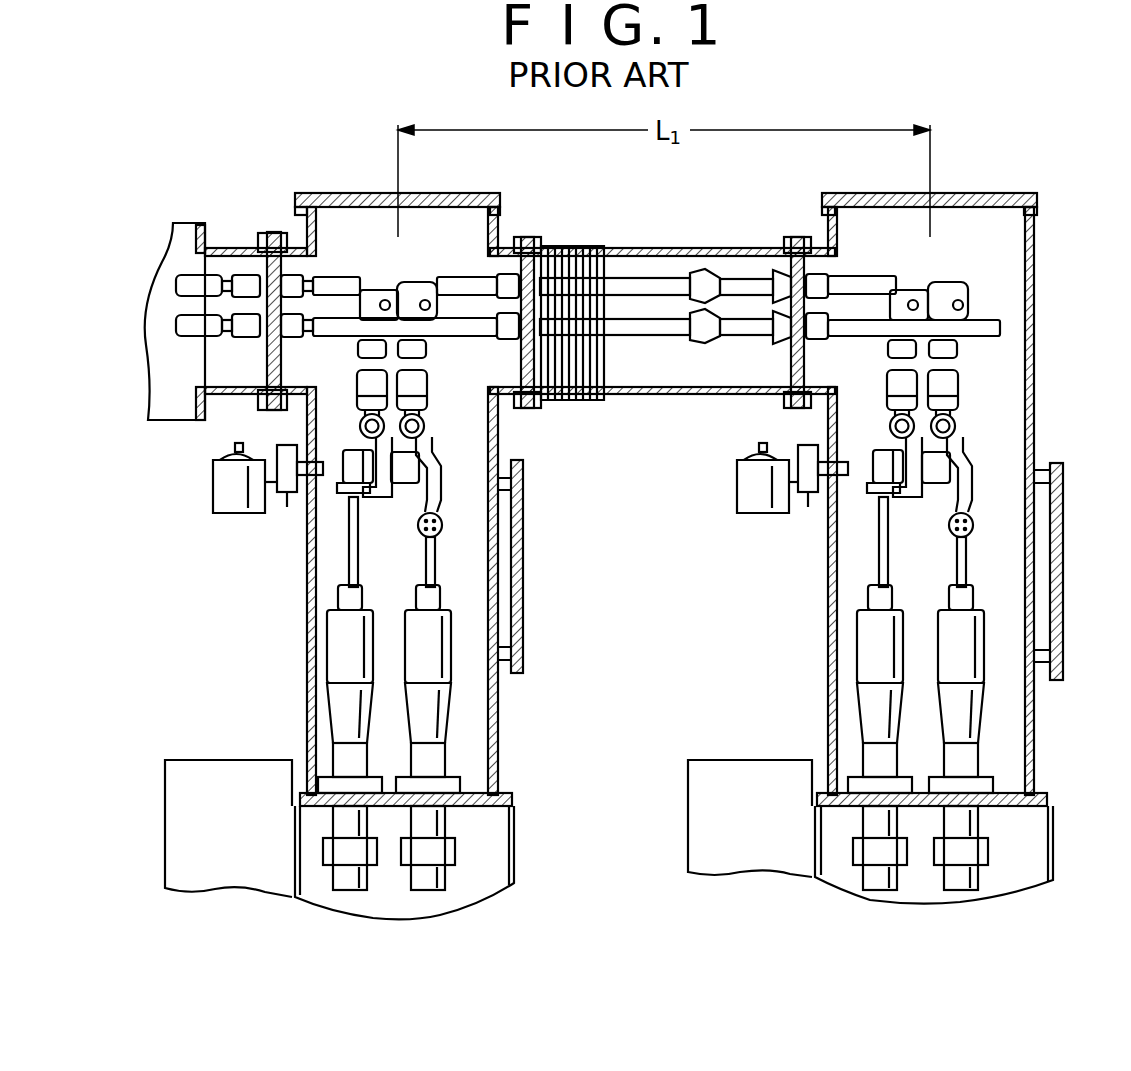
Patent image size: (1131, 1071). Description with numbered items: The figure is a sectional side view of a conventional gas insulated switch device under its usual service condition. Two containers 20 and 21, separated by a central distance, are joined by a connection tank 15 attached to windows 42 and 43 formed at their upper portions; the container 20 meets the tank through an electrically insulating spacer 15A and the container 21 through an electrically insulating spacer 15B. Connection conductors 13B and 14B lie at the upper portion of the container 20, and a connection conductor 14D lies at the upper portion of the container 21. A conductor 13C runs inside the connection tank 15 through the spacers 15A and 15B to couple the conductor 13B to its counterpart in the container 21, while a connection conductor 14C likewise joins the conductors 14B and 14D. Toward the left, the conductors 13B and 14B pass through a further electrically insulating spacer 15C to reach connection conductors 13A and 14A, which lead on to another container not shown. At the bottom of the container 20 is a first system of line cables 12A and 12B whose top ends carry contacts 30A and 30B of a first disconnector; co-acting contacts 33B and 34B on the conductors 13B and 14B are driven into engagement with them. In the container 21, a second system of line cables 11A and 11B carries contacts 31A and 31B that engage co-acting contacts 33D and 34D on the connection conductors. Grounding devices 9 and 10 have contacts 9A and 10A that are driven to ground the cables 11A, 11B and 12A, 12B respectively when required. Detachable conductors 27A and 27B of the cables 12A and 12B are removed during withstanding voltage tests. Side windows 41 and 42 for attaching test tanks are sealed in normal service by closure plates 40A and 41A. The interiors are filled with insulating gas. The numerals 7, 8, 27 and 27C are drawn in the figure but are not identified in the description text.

The fuse 7 is at (960, 362).
The fuse 8 is at (428, 376).
The grounding device 9 is at (746, 496).
The contact 9A is at (847, 478).
The grounding device 10 is at (212, 486).
The contact 10A is at (296, 495).
The line cable 11A is at (870, 642).
The line cable 11B is at (980, 626).
The line cable 12A is at (340, 636).
The line cable 12B is at (450, 662).
The connection conductor 13A is at (176, 326).
The connection conductor 13B is at (378, 292).
The conductor 13C is at (667, 337).
The connection conductor 14A is at (170, 285).
The connection conductor 14B is at (333, 278).
The connection conductor 14C is at (662, 278).
The connection conductor 14D is at (868, 278).
The connection tank 15 is at (712, 246).
The electrically insulating spacer 15A is at (527, 237).
The electrically insulating spacer 15B is at (797, 237).
The electrically insulating spacer 15C is at (272, 233).
The container 20 is at (306, 706).
The container 21 is at (1035, 724).
The switch link 27 is at (870, 556).
The detachable conductor 27A is at (350, 556).
The detachable conductor 27B is at (440, 572).
The switch link 27C is at (402, 512).
The contact 30A is at (310, 402).
The contact 30B is at (500, 420).
The contact 31A is at (836, 400).
The contact 31B is at (950, 385).
The co-acting contact 33B is at (412, 348).
The co-acting contact 33D is at (958, 338).
The co-acting contact 34B is at (368, 352).
The co-acting contact 34D is at (893, 352).
The closure plate 40A is at (523, 620).
The window 41 is at (500, 545).
The closure plate 41A is at (1063, 524).
The window 42 is at (545, 400).
The window 43 is at (796, 362).